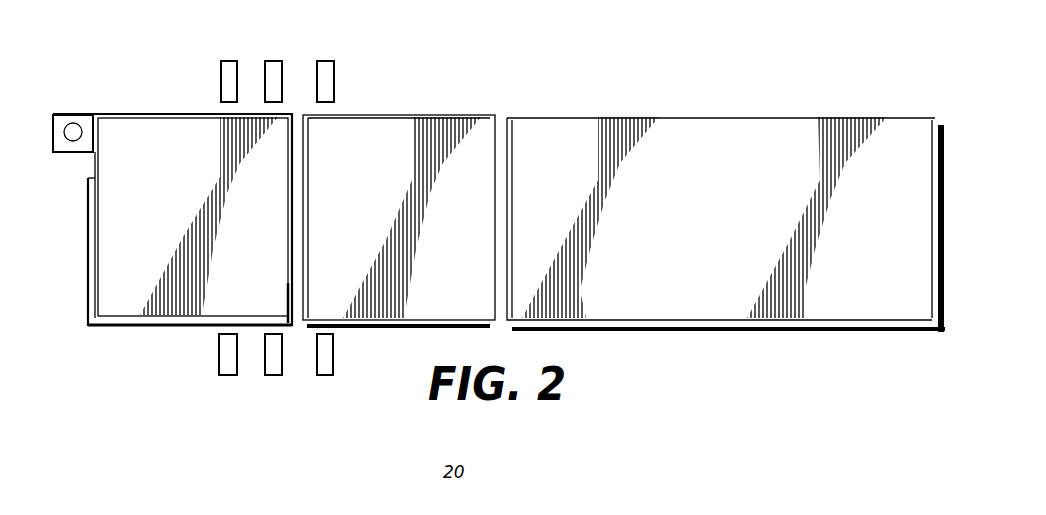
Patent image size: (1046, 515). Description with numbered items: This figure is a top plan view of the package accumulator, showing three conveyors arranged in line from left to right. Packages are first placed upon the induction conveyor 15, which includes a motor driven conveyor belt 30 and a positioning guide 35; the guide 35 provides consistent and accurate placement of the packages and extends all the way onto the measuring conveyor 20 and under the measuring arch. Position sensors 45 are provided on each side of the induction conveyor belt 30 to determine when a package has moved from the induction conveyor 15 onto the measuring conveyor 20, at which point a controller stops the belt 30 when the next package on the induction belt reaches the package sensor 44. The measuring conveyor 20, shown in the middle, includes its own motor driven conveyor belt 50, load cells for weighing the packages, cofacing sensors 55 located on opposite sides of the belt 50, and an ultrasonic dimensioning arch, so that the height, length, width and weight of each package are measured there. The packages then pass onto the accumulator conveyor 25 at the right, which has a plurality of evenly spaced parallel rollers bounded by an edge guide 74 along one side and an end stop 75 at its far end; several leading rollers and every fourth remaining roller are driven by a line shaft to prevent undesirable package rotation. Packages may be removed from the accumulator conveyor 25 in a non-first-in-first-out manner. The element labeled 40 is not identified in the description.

The induction conveyor 15 is at (150, 333).
The measuring conveyor 20 is at (274, 224).
The accumulator conveyor 25 is at (726, 250).
The conveyor belt 30 is at (167, 173).
The positioning guide 35 is at (110, 319).
The hinge mount 40 is at (73, 123).
The package sensor 44 is at (228, 61).
The position sensors 45 is at (274, 61).
The conveyor belt 50 is at (368, 177).
The cofacing sensors 55 is at (326, 61).
The edge guide 74 is at (933, 158).
The end stop 75 is at (798, 326).